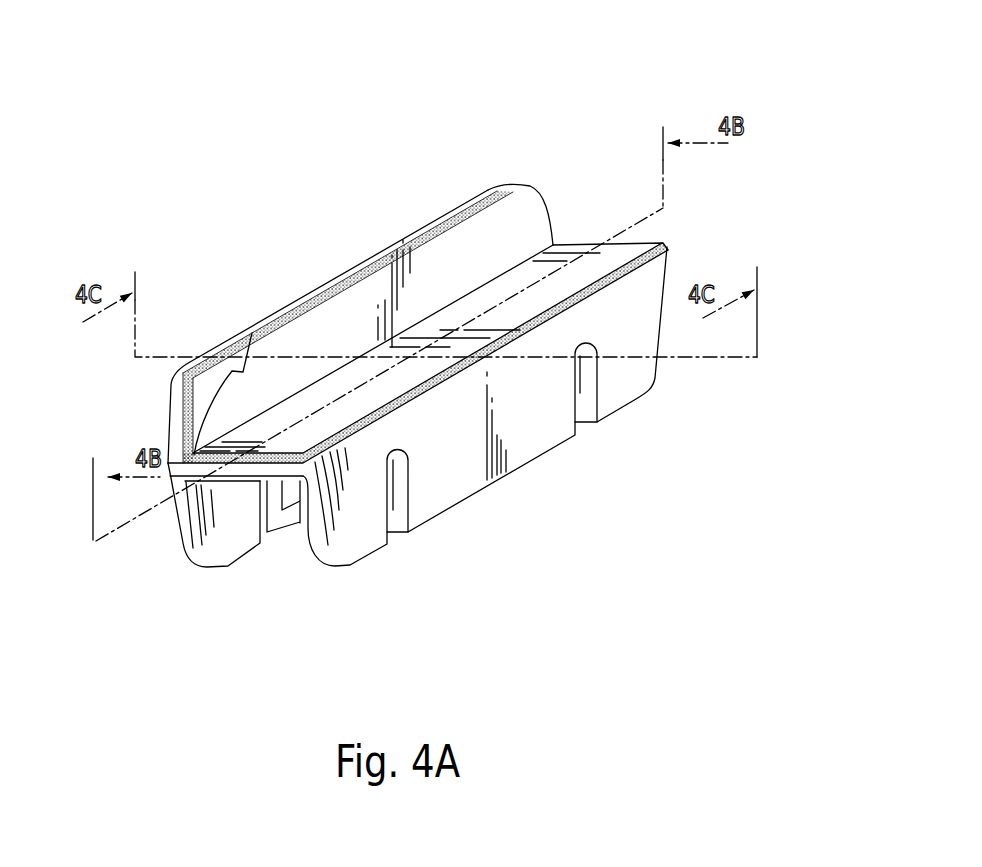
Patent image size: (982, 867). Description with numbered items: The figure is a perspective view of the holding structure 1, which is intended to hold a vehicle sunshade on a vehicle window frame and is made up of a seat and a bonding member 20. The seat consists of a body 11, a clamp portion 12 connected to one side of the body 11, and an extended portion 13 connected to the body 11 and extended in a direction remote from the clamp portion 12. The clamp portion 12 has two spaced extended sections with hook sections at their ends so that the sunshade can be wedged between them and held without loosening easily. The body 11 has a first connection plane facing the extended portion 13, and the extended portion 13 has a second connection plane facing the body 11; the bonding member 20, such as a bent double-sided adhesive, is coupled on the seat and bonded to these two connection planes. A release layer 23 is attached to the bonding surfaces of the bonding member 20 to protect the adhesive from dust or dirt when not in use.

The holding structure 1 is at (517, 300).
The body 11 is at (668, 250).
The clamp portion 12 is at (552, 434).
The extended portion 13 is at (384, 258).
The bonding member 20 is at (183, 433).
The release layer 23 is at (528, 215).